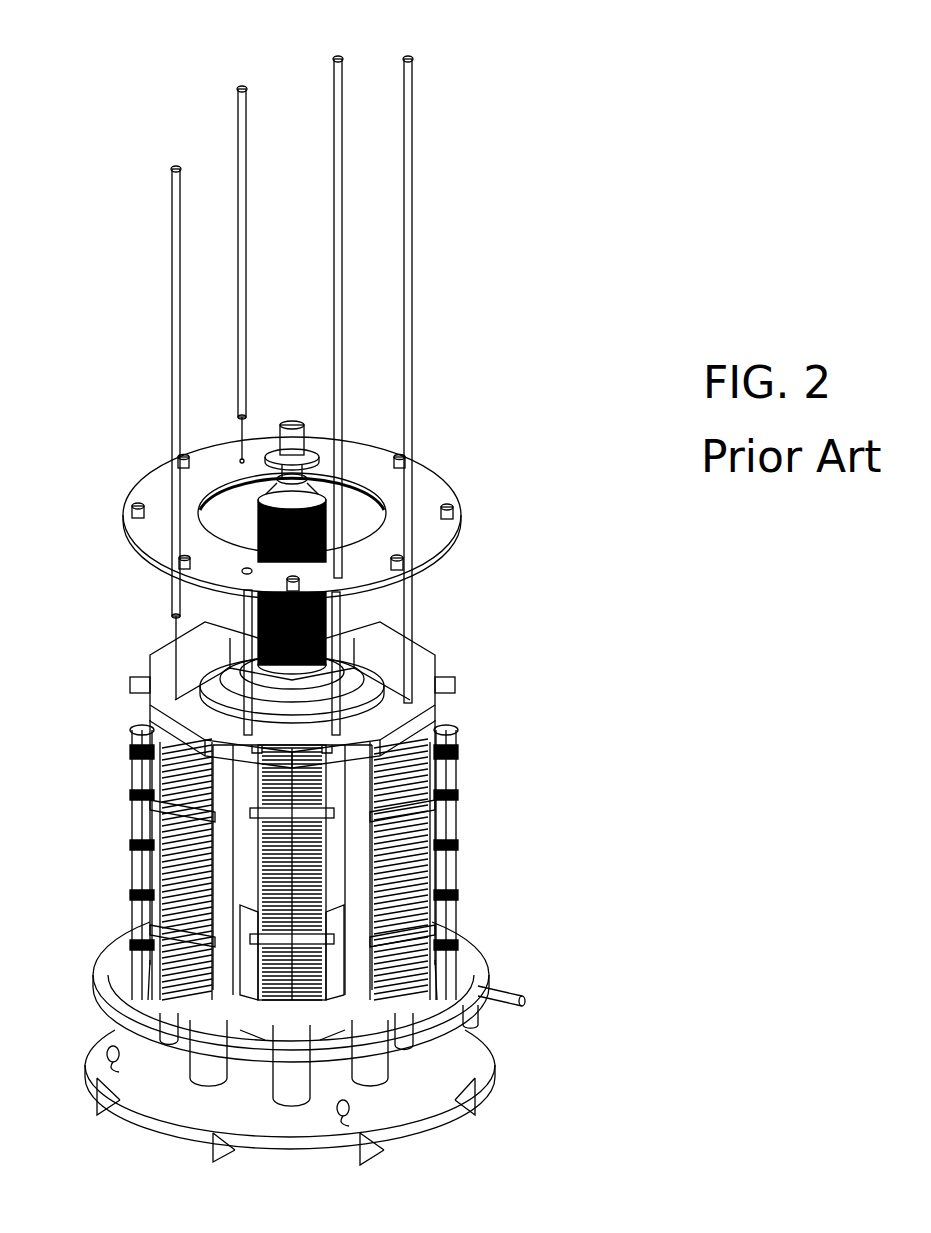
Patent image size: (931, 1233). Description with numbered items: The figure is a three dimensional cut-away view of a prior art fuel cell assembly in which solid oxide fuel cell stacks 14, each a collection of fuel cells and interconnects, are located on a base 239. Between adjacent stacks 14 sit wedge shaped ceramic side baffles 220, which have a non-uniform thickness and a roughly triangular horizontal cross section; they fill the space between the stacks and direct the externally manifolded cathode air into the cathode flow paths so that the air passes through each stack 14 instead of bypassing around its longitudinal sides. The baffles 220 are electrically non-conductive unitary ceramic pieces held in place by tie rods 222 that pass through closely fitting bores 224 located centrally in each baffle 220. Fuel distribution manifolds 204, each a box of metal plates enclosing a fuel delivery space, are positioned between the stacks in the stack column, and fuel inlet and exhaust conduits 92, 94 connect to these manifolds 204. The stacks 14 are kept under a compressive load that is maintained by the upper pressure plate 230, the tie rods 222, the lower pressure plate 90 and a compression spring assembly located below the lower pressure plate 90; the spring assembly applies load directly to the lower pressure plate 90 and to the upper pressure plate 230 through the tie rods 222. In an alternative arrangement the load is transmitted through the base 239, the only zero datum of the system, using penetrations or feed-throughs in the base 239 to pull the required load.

The solid oxide fuel cell stack 14 is at (322, 780).
The lower pressure plate 90 is at (468, 946).
The fuel inlet conduit 92 is at (258, 913).
The fuel exhaust conduit 94 is at (313, 922).
The fuel distribution manifold 204 is at (262, 815).
The wedge shaped ceramic side baffle 220 is at (432, 700).
The tie rod 222 is at (342, 420).
The bore 224 is at (172, 702).
The upper pressure plate 230 is at (133, 490).
The base 239 is at (98, 1034).